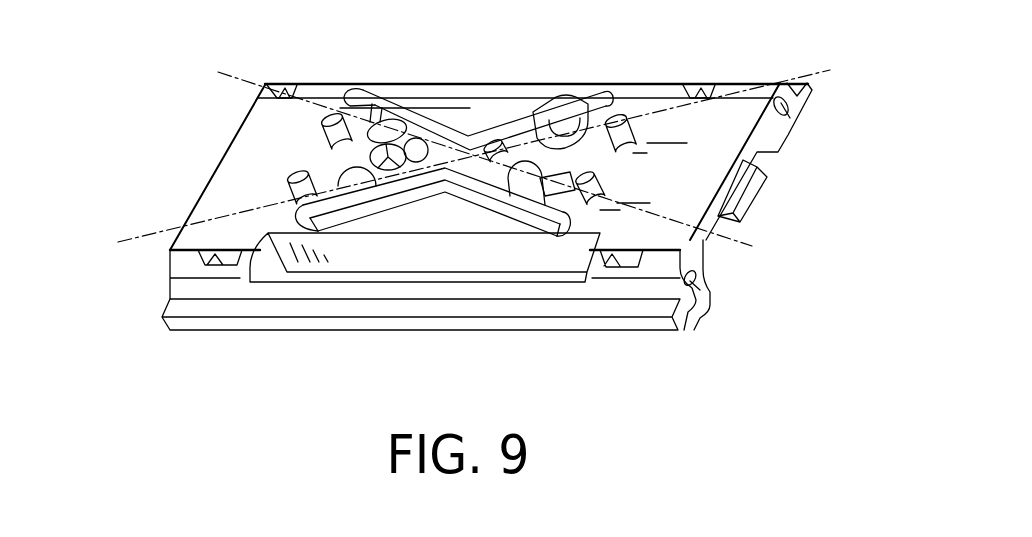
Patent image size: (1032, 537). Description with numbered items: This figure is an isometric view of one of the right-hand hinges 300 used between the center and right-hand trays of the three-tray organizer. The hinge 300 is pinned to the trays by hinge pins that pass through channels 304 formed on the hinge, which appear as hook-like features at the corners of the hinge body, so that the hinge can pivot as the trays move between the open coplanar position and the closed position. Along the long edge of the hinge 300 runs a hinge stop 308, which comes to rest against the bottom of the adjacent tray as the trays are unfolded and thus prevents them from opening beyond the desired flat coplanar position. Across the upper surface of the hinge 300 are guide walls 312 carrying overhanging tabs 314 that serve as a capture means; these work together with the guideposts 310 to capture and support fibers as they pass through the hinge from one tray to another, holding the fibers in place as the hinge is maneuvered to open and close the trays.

The hinge 300 is at (243, 173).
The channel 304 is at (783, 113).
The hinge stop 308 is at (805, 95).
The guidepost 310 is at (317, 113).
The guide wall 312 is at (421, 115).
The overhanging tab 314 is at (350, 177).